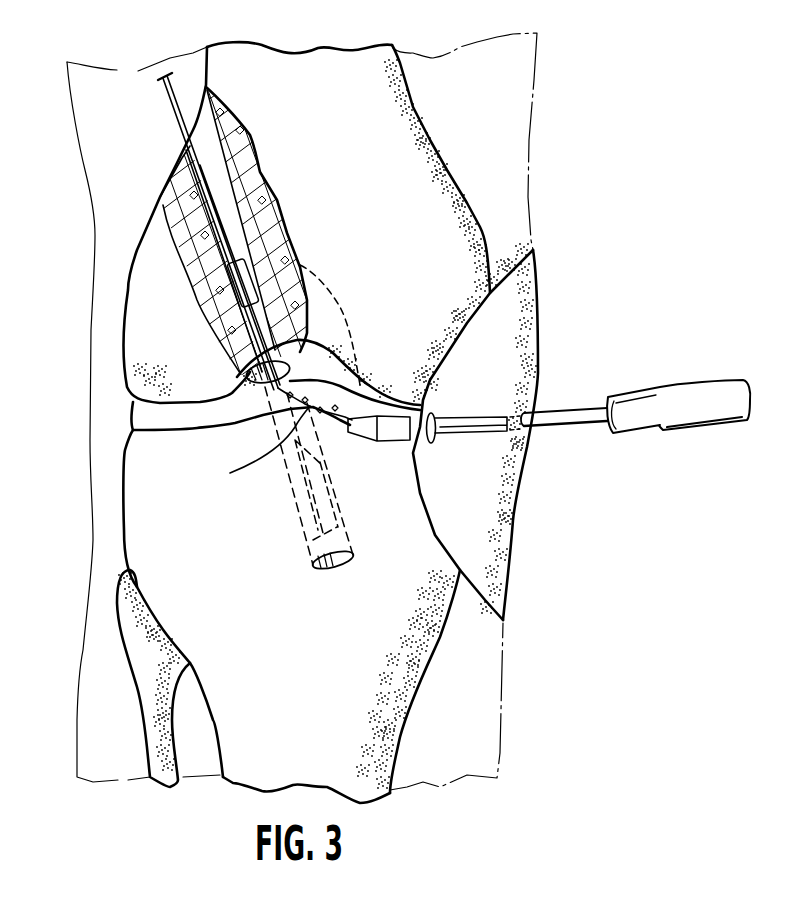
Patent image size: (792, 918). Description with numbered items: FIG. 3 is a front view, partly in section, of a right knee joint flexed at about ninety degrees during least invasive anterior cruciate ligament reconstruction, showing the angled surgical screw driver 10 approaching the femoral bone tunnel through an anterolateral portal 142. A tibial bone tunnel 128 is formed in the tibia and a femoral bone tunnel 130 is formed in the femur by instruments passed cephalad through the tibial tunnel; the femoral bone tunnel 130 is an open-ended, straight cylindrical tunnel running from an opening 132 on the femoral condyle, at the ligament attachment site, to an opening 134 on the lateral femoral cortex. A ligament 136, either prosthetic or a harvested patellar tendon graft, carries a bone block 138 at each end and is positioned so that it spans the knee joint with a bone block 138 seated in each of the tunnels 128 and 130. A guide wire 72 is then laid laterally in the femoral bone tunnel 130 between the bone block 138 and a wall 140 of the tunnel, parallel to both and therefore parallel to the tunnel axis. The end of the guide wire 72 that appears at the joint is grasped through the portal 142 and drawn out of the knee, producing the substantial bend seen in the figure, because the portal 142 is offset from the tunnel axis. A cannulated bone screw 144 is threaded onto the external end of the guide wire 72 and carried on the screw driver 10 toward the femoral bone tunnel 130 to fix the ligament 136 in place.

The angled surgical screw driver 10 is at (573, 406).
The guide wire 72 is at (243, 142).
The tibial bone tunnel 128 is at (330, 476).
The femoral bone tunnel 130 is at (258, 180).
The opening on the femoral condyle 132 is at (295, 360).
The opening on the lateral femoral cortex 134 is at (182, 158).
The ligament 136 is at (290, 305).
The bone block 138 is at (257, 282).
The wall of the femoral bone tunnel 140 is at (217, 250).
The anterolateral portal 142 is at (432, 440).
The bone screw 144 is at (250, 449).